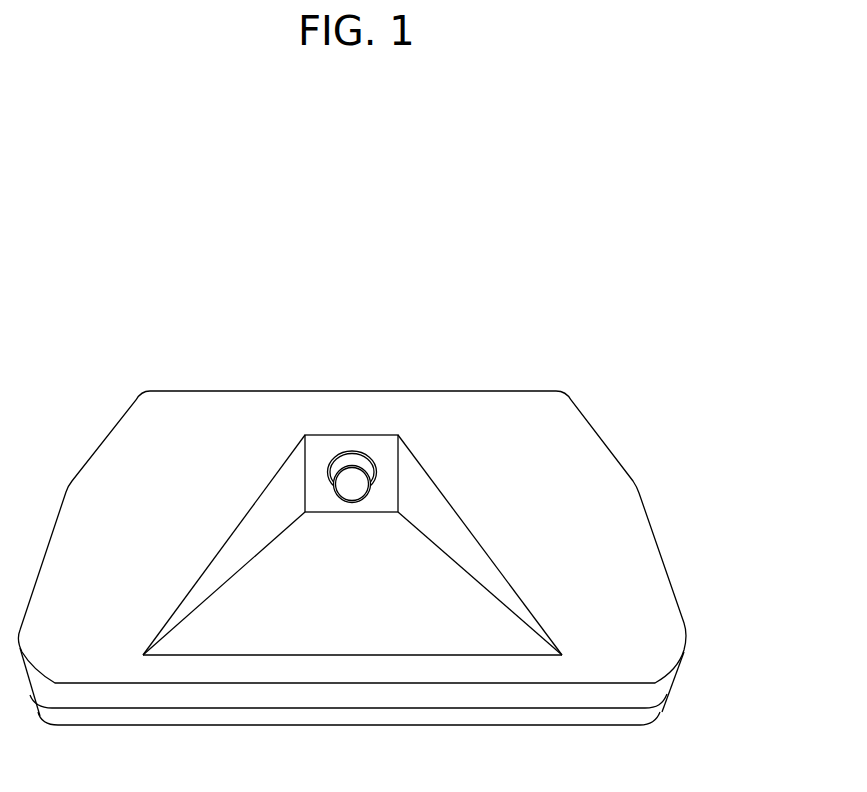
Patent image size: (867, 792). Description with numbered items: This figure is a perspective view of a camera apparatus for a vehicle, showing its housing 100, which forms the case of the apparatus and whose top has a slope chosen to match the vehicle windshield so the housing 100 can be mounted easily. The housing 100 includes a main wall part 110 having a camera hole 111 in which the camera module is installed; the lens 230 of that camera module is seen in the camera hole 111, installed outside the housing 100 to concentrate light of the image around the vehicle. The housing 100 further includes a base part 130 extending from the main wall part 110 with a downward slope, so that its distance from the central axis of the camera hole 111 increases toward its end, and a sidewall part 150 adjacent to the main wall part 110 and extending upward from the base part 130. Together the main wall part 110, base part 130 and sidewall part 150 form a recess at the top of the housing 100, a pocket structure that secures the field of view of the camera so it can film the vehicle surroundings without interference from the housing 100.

The housing 100 is at (507, 413).
The main wall part 110 is at (318, 445).
The camera hole 111 is at (367, 460).
The lens 230 is at (354, 475).
The sidewall part 150 is at (240, 548).
The base part 130 is at (433, 592).